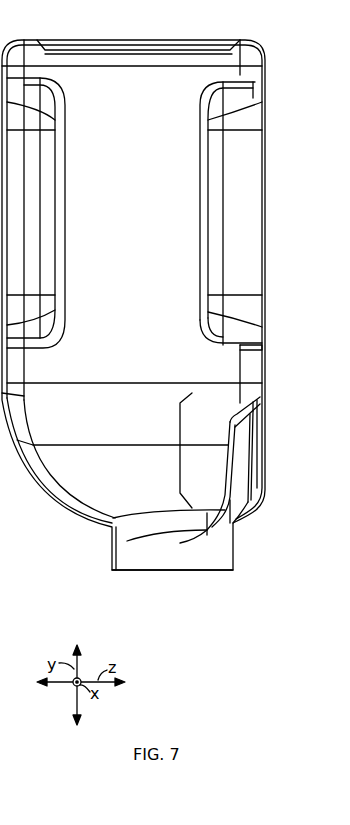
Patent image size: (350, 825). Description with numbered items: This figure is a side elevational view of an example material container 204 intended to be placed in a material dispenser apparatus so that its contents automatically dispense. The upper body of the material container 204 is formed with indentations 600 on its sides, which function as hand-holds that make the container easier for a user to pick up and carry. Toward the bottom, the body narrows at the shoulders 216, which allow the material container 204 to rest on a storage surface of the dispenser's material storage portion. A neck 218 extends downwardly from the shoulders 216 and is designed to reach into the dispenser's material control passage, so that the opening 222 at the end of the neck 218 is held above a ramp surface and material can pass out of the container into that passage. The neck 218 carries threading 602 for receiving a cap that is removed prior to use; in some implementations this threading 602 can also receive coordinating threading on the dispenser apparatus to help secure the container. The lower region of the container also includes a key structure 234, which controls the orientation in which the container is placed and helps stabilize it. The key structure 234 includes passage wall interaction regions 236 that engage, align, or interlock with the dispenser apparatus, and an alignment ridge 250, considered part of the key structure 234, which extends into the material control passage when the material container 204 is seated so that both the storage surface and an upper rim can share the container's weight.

The material container 204 is at (147, 236).
The indentations 600 is at (52, 160).
The key structure 234 is at (178, 458).
The passage wall interaction regions 236 is at (236, 480).
The alignment ridge 250 is at (266, 477).
The shoulders 216 is at (72, 509).
The threading 602 is at (112, 558).
The neck 218 is at (186, 566).
The opening 222 is at (152, 573).